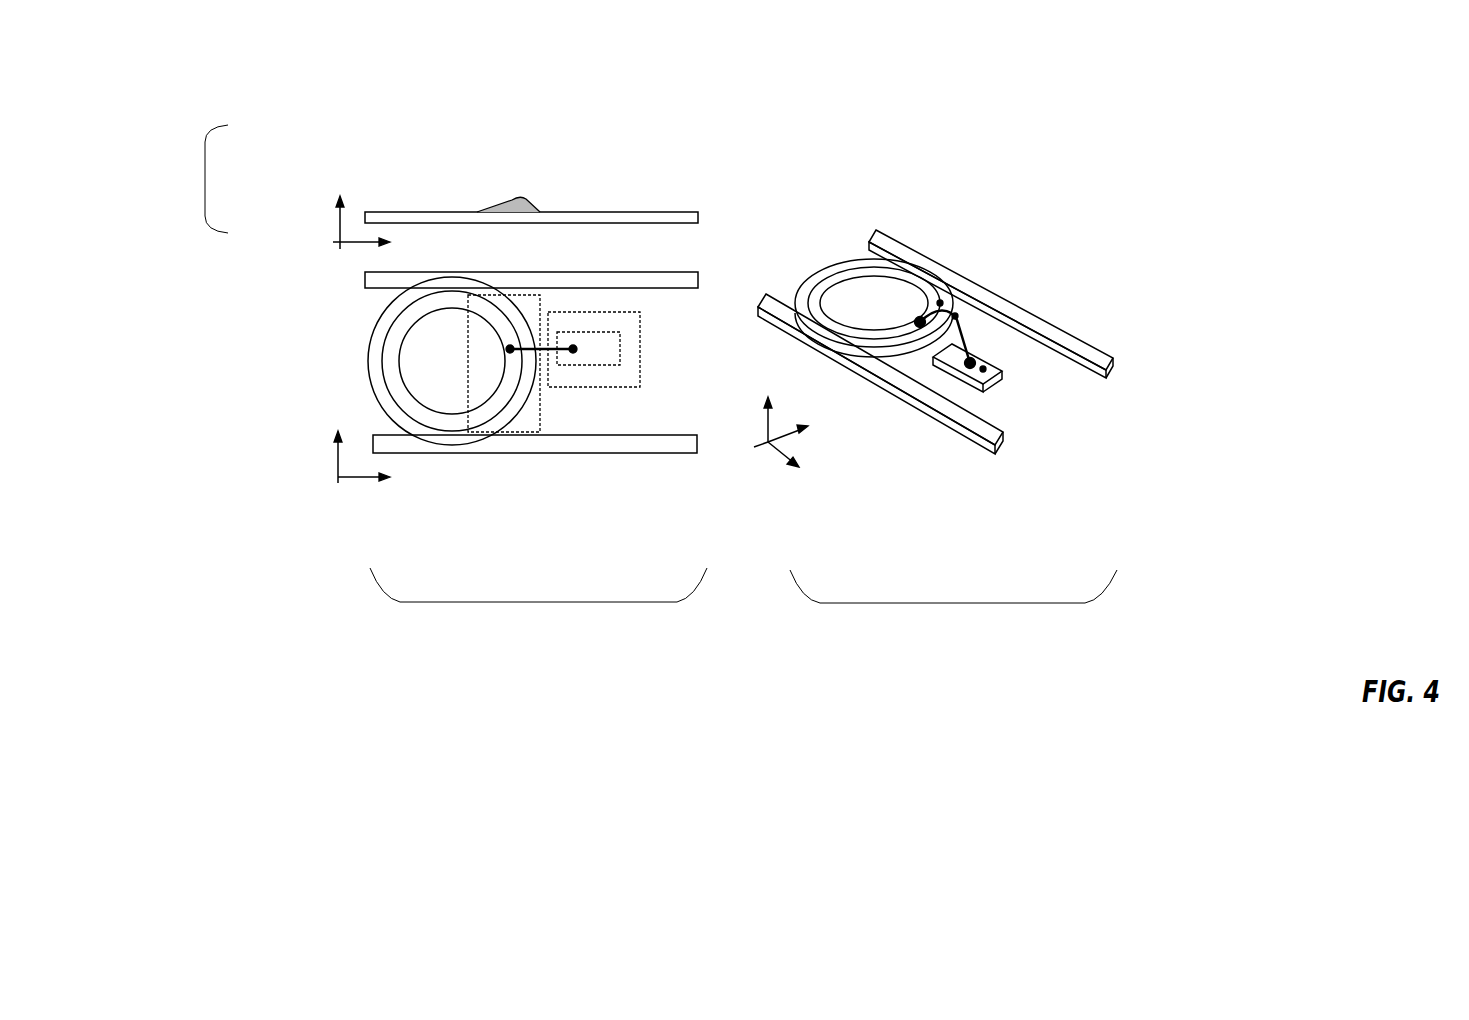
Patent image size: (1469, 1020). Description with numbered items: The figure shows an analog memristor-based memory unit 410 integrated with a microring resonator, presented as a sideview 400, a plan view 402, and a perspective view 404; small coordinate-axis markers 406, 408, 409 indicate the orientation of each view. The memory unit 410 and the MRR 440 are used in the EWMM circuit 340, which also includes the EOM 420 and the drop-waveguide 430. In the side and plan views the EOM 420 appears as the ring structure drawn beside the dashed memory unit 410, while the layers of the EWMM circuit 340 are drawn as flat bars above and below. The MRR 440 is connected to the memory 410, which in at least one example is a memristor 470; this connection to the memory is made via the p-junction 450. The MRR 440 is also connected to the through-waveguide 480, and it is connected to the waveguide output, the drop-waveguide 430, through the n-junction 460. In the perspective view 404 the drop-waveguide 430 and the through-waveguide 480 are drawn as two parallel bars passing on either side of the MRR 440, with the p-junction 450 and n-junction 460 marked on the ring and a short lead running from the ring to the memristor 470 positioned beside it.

The EWMM circuit 340 is at (610, 210).
The sideview 400 is at (205, 178).
The plan view 402 is at (538, 602).
The perspective view 404 is at (952, 603).
The x axis 406 is at (373, 512).
The y axis 408 is at (325, 445).
The z axis 409 is at (315, 190).
The analog memristor-based memory unit 410 is at (638, 313).
The electro-optic modulator 420 is at (468, 362).
The drop-waveguide 430 is at (892, 238).
The microring resonator 440 is at (932, 282).
The p-junction 450 is at (940, 303).
The n-junction 460 is at (955, 316).
The memristor 470 is at (983, 369).
The through-waveguide 480 is at (952, 410).